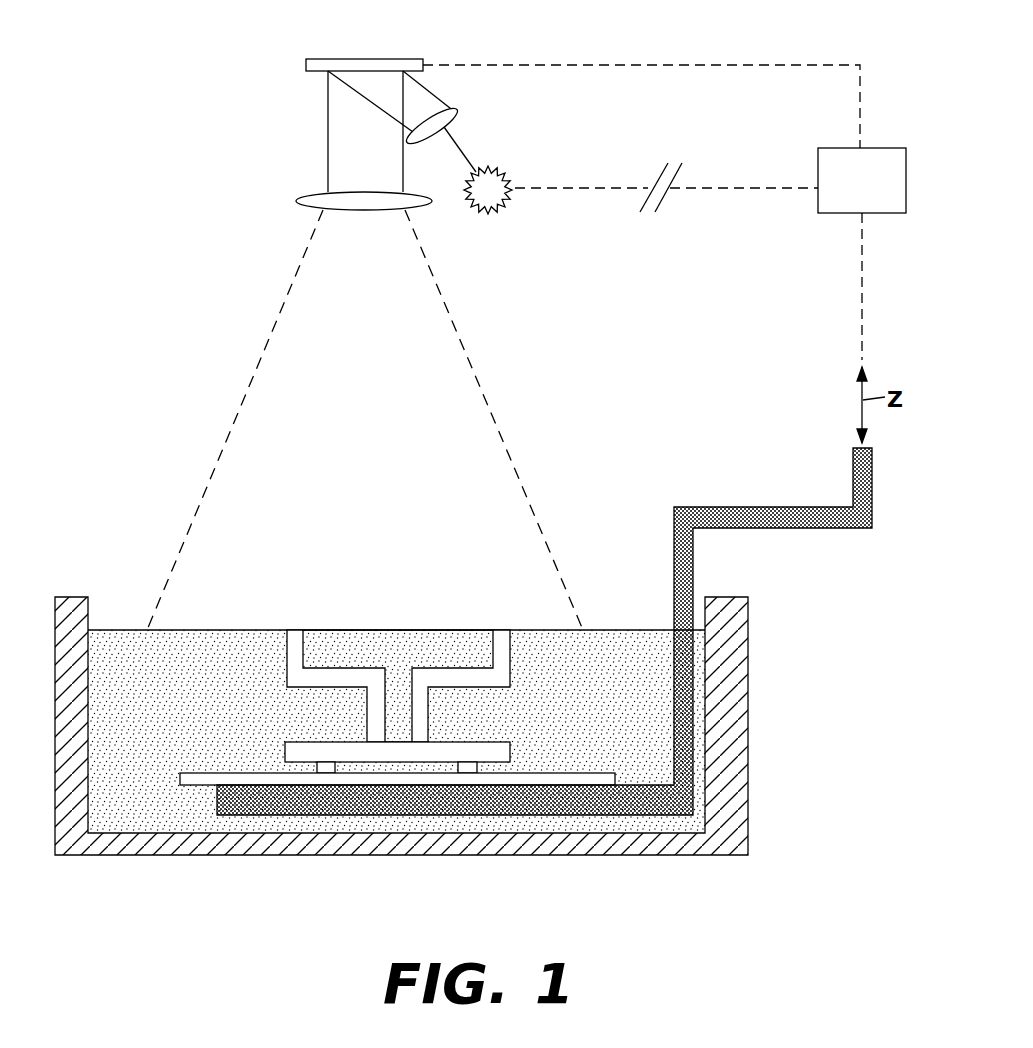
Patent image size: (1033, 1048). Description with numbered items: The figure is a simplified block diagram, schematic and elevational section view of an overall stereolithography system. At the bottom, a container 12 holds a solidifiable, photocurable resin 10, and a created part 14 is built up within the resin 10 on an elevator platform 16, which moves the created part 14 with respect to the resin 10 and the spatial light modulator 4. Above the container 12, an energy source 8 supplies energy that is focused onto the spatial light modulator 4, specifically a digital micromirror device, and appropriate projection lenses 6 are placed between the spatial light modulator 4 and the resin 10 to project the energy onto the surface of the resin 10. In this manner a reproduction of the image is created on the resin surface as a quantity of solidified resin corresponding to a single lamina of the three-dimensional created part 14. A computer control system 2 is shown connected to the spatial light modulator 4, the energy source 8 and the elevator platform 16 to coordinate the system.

The computer control system 2 is at (851, 198).
The spatial light modulator 4 is at (296, 66).
The projection lenses 6 is at (430, 188).
The energy source 8 is at (518, 214).
The solidifiable resin 10 is at (125, 663).
The container 12 is at (61, 583).
The created part 14 is at (522, 676).
The elevator platform 16 is at (819, 539).